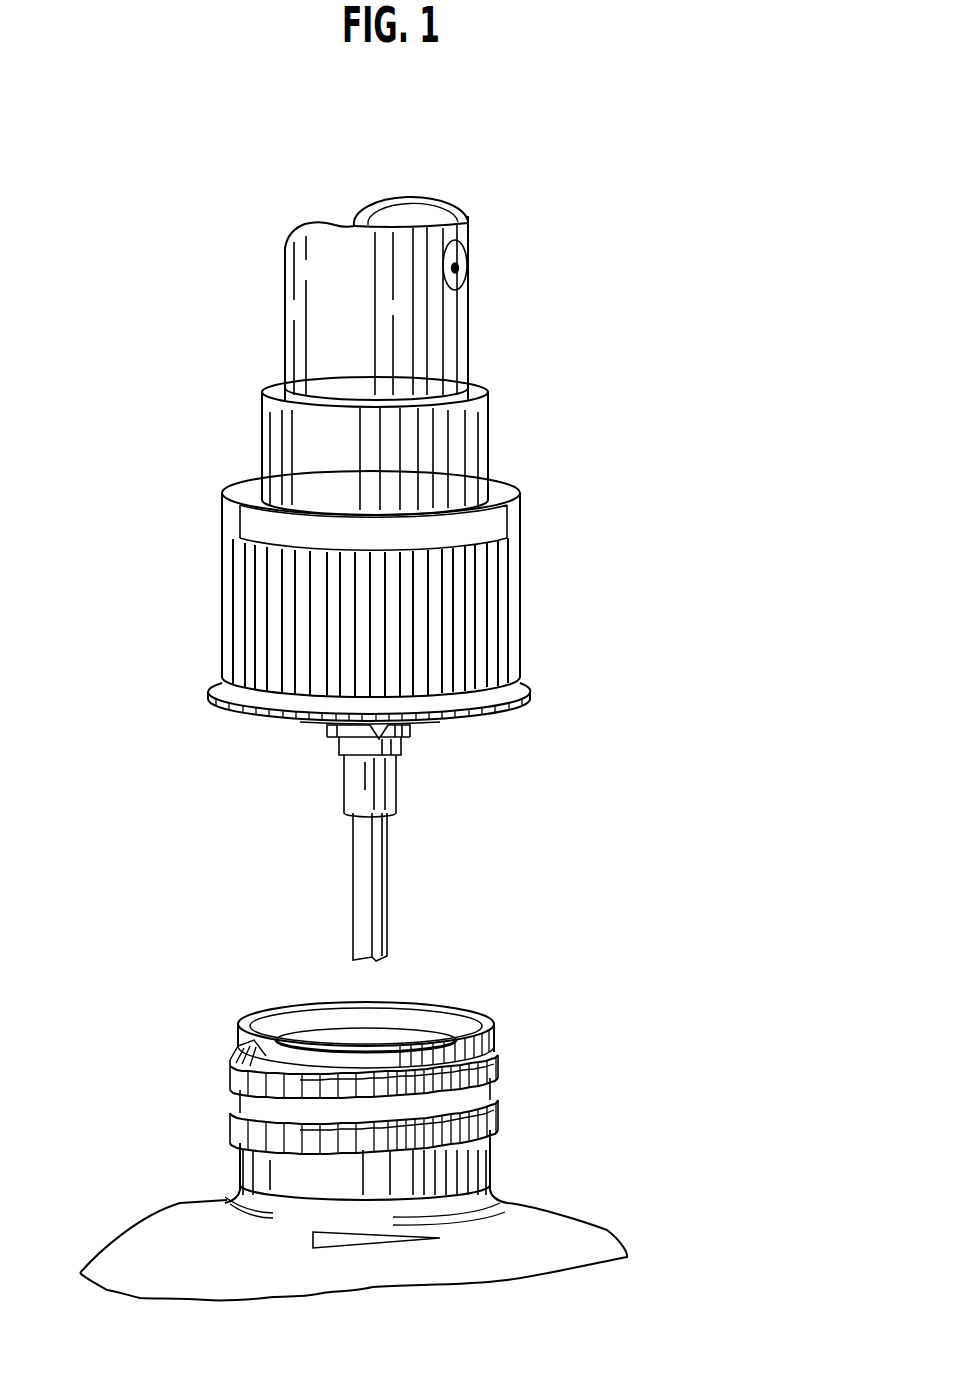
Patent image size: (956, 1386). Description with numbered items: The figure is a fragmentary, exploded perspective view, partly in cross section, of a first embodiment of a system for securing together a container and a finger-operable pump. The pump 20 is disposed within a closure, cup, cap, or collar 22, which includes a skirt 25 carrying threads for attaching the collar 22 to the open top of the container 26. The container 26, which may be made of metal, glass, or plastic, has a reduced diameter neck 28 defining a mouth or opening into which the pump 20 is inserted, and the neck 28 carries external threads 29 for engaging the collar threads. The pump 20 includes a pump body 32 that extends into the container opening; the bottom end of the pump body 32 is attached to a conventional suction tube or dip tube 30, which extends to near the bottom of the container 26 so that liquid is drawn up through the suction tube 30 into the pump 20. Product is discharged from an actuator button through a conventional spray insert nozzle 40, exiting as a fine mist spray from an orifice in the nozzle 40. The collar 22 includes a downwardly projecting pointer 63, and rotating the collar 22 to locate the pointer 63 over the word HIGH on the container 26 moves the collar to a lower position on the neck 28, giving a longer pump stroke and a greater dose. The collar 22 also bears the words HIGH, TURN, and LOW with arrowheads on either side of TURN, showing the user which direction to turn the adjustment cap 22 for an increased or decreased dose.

The pump 20 is at (466, 201).
The spray insert nozzle 40 is at (467, 278).
The collar 22 is at (514, 477).
The skirt 25 is at (511, 621).
The pointer 63 is at (332, 731).
The pump body 32 is at (419, 737).
The suction tube 30 is at (381, 880).
The external threads 29 is at (501, 1073).
The neck 28 is at (421, 1113).
The container 26 is at (166, 1204).